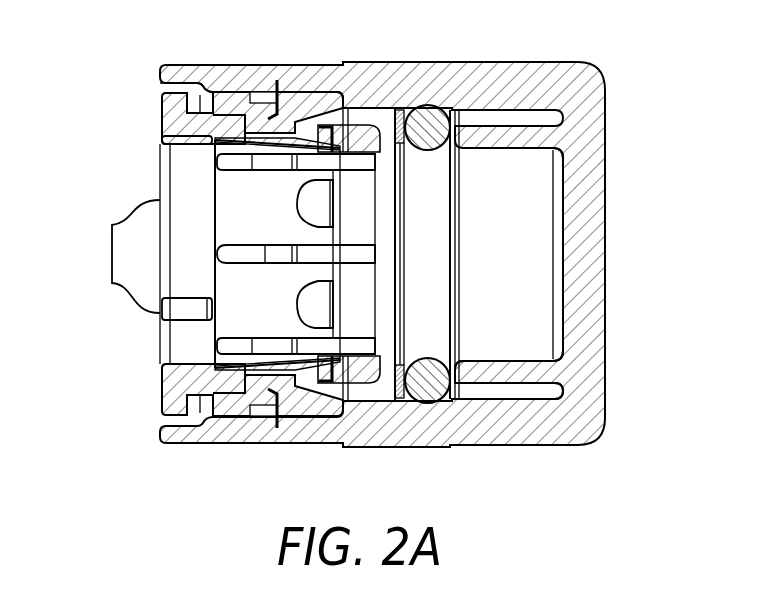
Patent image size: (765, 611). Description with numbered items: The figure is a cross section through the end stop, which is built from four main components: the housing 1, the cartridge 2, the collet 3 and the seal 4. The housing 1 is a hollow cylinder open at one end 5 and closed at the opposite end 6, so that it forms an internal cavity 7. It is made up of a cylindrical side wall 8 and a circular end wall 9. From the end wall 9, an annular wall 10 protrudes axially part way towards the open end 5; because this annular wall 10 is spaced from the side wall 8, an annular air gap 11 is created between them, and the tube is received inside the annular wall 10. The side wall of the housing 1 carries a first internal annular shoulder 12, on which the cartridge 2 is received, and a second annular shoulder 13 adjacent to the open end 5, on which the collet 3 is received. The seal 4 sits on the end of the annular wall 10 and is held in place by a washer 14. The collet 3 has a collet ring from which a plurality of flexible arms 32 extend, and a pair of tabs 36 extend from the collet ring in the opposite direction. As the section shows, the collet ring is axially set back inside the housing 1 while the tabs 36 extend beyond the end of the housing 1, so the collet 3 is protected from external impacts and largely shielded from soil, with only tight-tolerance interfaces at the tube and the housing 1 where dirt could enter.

The housing 1 is at (552, 62).
The cartridge 2 is at (311, 106).
The collet 3 is at (160, 388).
The seal 4 is at (429, 118).
The open end 5 is at (142, 64).
The closed end 6 is at (630, 63).
The internal cavity 7 is at (513, 266).
The cylindrical side wall 8 is at (540, 447).
The circular end wall 9 is at (612, 253).
The annular wall 10 is at (508, 361).
The annular air gap 11 is at (480, 399).
The first internal annular shoulder 12 is at (348, 97).
The second annular shoulder 13 is at (215, 75).
The washer 14 is at (402, 403).
The flexible arms 32 is at (236, 196).
The tabs 36 is at (110, 253).